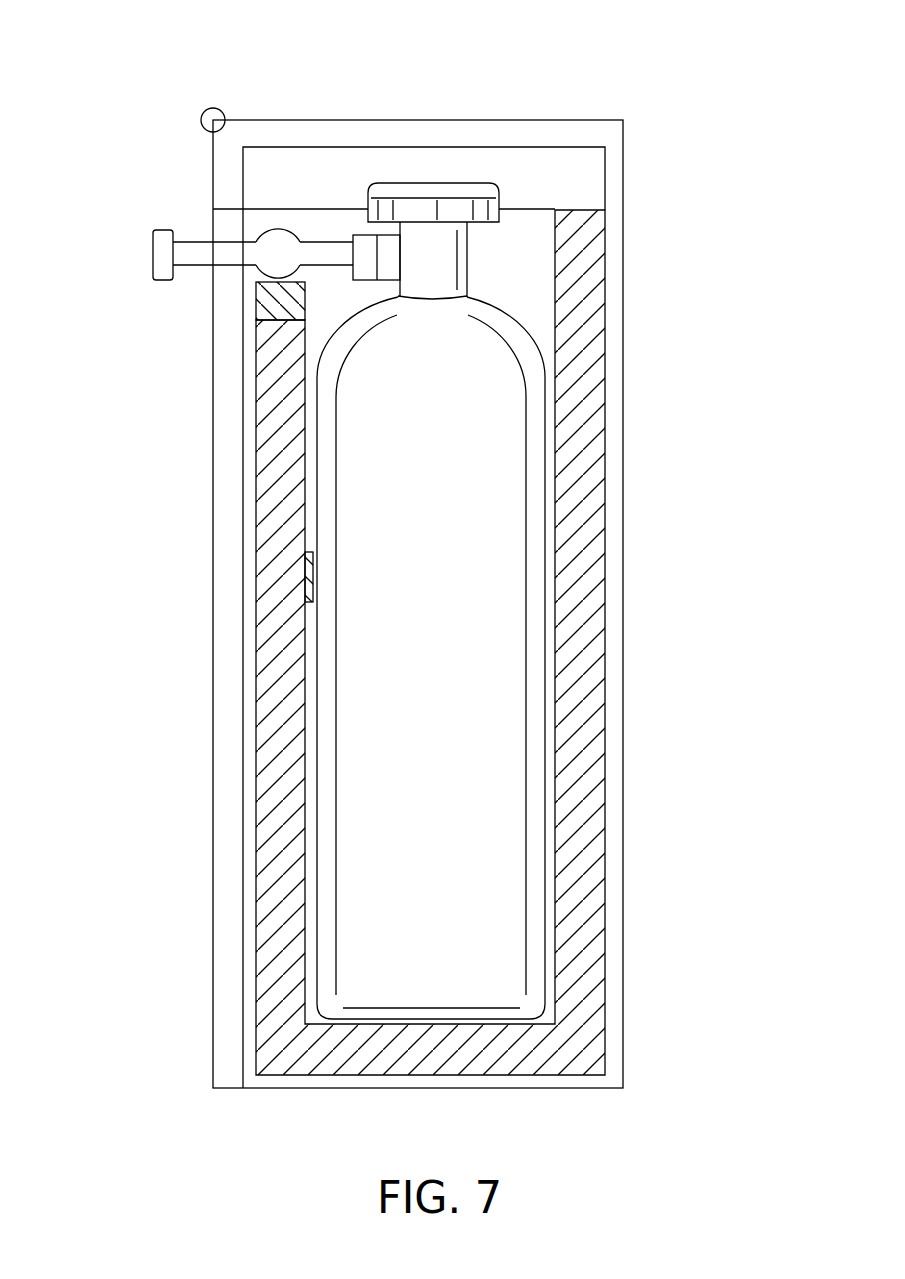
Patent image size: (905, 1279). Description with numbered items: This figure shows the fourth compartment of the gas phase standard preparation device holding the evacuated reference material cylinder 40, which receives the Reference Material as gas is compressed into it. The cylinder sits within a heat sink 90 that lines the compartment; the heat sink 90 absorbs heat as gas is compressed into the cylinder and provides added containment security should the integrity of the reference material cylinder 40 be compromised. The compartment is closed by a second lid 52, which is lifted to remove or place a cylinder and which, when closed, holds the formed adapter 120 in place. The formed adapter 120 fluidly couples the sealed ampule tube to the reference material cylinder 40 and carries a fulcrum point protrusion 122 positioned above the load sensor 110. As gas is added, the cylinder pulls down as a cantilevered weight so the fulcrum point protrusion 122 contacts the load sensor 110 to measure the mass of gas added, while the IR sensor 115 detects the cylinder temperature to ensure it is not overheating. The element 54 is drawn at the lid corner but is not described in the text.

The reference material cylinder 40 is at (465, 452).
The second lid 52 is at (467, 120).
The hinge / pivot 54 is at (207, 109).
The heat sink 90 is at (575, 722).
The load sensor 110 is at (262, 299).
The infrared (IR) sensor 115 is at (313, 577).
The formed adapter 120 is at (278, 253).
The fulcrum point protrusion 122 is at (277, 272).